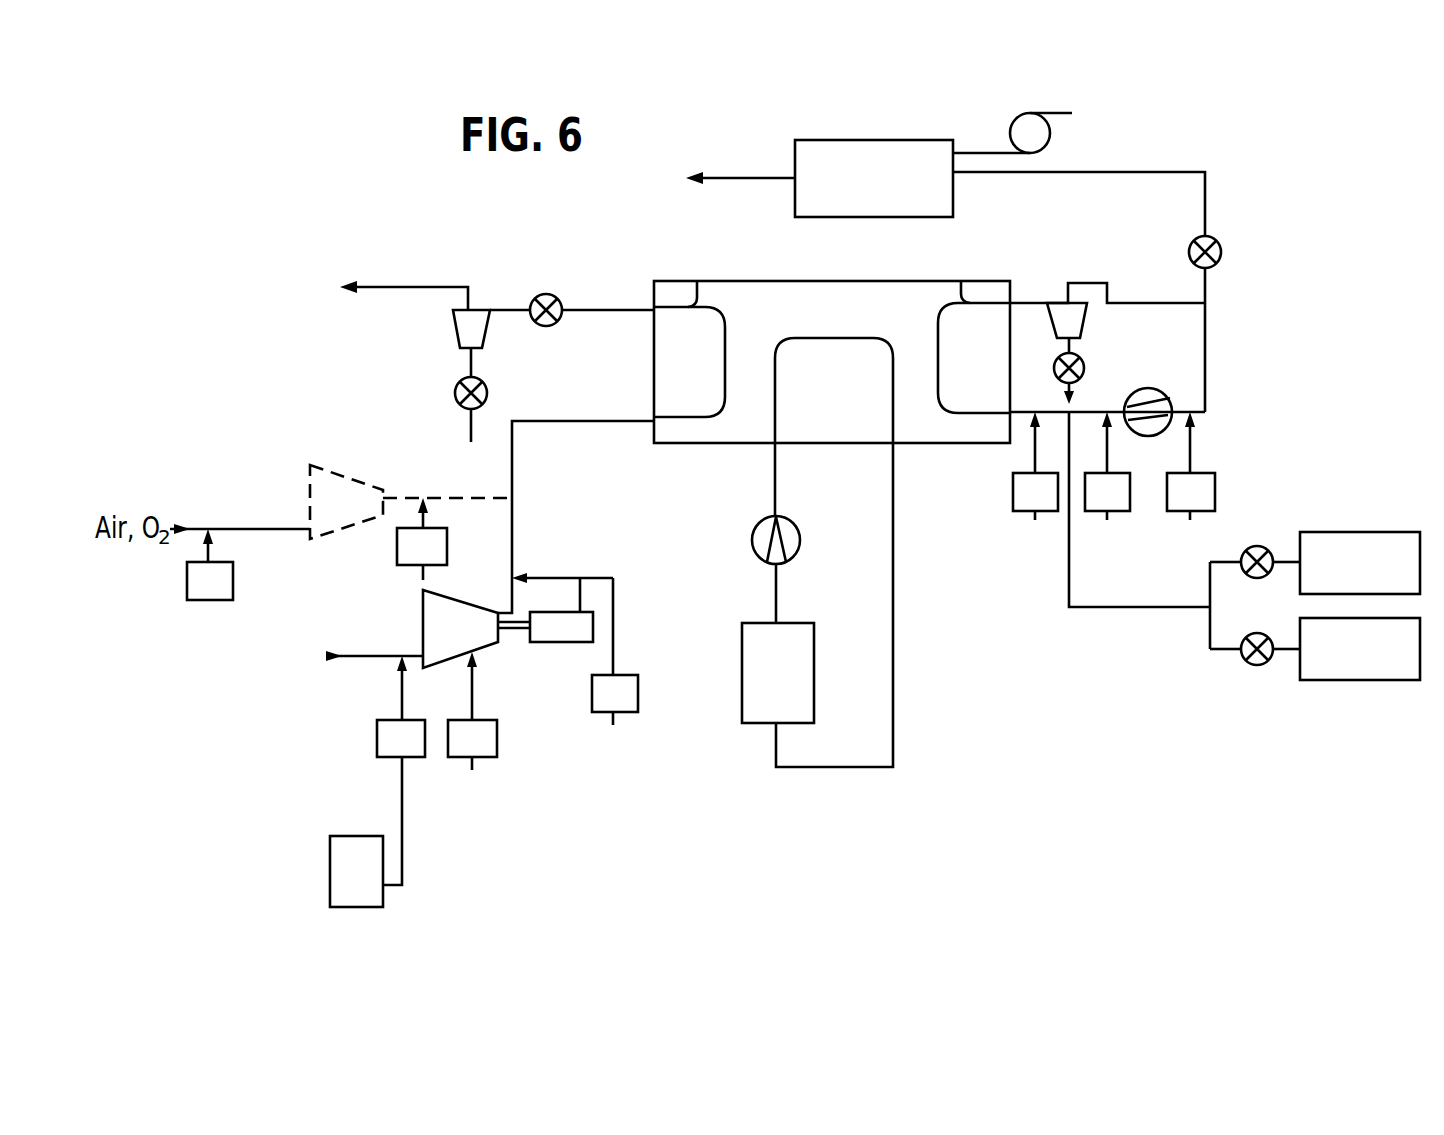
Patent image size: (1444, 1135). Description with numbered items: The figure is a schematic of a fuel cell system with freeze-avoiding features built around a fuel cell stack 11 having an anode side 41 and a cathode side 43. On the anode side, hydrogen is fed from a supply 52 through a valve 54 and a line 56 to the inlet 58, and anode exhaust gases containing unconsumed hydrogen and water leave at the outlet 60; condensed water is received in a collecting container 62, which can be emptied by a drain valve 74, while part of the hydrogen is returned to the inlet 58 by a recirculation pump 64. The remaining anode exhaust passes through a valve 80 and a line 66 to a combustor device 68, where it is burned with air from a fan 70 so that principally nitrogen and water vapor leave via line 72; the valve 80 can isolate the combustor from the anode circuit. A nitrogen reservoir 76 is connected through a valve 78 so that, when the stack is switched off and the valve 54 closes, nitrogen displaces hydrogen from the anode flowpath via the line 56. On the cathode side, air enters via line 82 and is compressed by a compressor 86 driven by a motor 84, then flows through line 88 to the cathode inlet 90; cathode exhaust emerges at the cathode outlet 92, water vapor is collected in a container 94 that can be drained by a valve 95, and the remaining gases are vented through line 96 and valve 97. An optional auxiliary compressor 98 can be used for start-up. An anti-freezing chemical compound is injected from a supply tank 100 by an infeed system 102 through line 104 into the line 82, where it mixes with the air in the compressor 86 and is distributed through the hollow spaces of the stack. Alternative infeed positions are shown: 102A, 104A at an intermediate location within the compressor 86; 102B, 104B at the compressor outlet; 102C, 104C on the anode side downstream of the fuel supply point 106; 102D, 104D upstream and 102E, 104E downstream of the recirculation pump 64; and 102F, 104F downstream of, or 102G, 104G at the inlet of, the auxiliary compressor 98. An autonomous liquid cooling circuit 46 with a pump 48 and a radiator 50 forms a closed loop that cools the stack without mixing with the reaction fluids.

The fuel cell stack 11 is at (791, 270).
The anode side 41 is at (962, 282).
The cathode side 43 is at (697, 284).
The liquid cooling circuit 46 is at (893, 630).
The pump 48 is at (760, 528).
The radiator 50 is at (762, 712).
The hydrogen supply 52 is at (1393, 668).
The valve 54 is at (1250, 663).
The line 56 is at (1115, 608).
The inlet 58 is at (1012, 408).
The outlet 60 is at (1015, 302).
The collecting container 62 is at (1076, 312).
The pump 64 is at (1152, 388).
The line 66 is at (1210, 188).
The combustor device 68 is at (874, 162).
The fan 70 is at (1050, 135).
The line 72 is at (740, 178).
The drain valve 74 is at (1082, 365).
The nitrogen reservoir 76 is at (1385, 548).
The valve 78 is at (1255, 546).
The valve 80 is at (1221, 252).
The line 82 is at (370, 656).
The motor 84 is at (582, 578).
The compressor 86 is at (485, 645).
The line 88 is at (512, 468).
The cathode inlet 90 is at (654, 428).
The cathode outlet 92 is at (654, 306).
The container 94 is at (456, 328).
The valve 95 is at (456, 395).
The line 96 is at (405, 287).
The valve 97 is at (545, 294).
The auxiliary compressor 98 is at (343, 545).
The supply tank 100 is at (330, 872).
The infeed system 102 is at (377, 740).
The infeed system 102A is at (482, 750).
The infeed system 102B is at (618, 705).
The infeed system 102C is at (1018, 490).
The infeed system 102D is at (1115, 512).
The infeed system 102E is at (1215, 493).
The infeed system 102F is at (447, 543).
The infeed system 102G is at (205, 590).
The line 104 is at (402, 690).
The line 104A is at (472, 700).
The line 104B is at (614, 628).
The line 104C is at (1032, 443).
The line 104D is at (1112, 446).
The line 104E is at (1195, 445).
The line 104F is at (428, 516).
The line 104G is at (192, 548).
The supply point 106 is at (1068, 525).